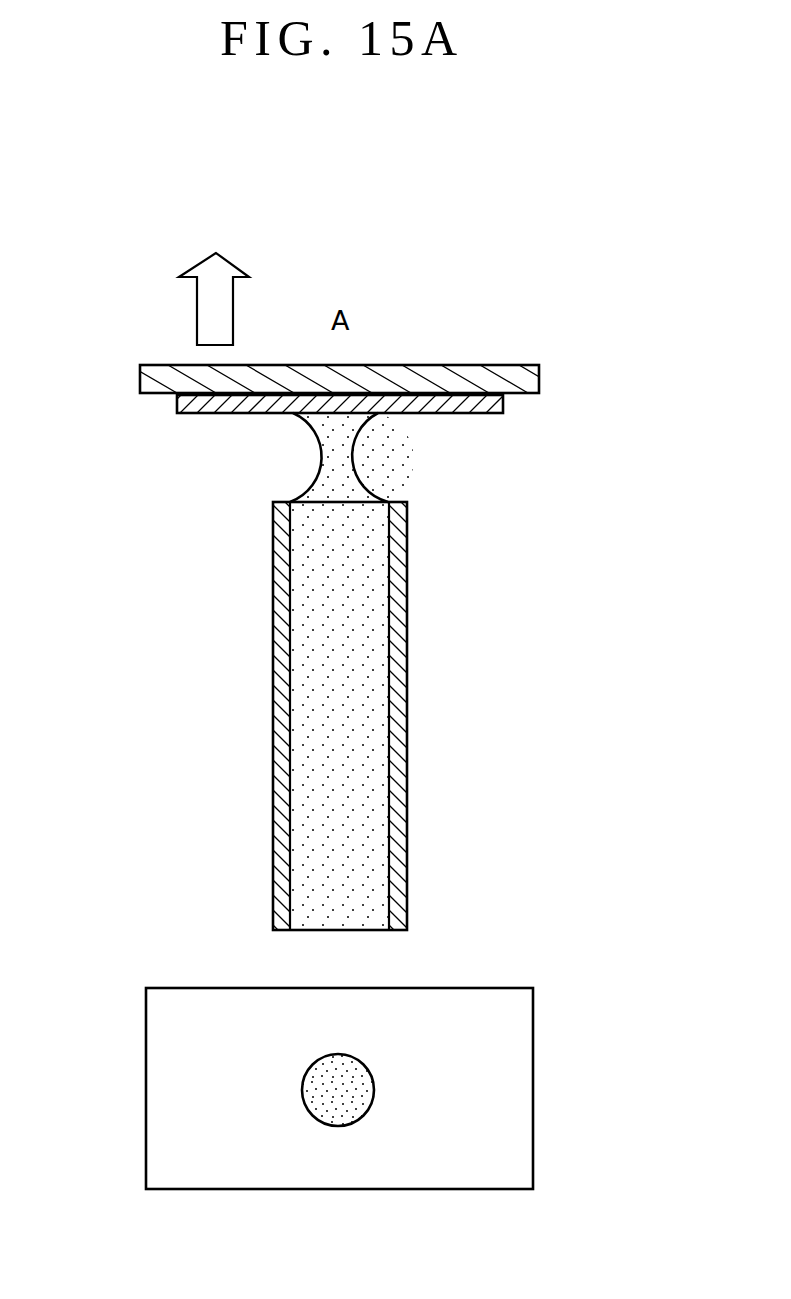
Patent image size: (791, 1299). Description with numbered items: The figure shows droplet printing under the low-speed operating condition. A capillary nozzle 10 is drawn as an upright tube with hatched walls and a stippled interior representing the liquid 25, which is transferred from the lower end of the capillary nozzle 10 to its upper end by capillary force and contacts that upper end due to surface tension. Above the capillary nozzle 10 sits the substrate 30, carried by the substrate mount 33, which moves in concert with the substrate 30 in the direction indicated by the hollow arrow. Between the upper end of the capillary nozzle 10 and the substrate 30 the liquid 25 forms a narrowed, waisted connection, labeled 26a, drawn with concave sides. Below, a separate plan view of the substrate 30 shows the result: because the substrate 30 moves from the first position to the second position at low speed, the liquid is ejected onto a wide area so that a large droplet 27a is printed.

The capillary nozzle 10 is at (271, 682).
The liquid 25 is at (360, 740).
The neck portion 26a is at (377, 452).
The large droplet 27a is at (378, 1065).
The substrate 30 is at (177, 406).
The substrate mount 33 is at (140, 382).